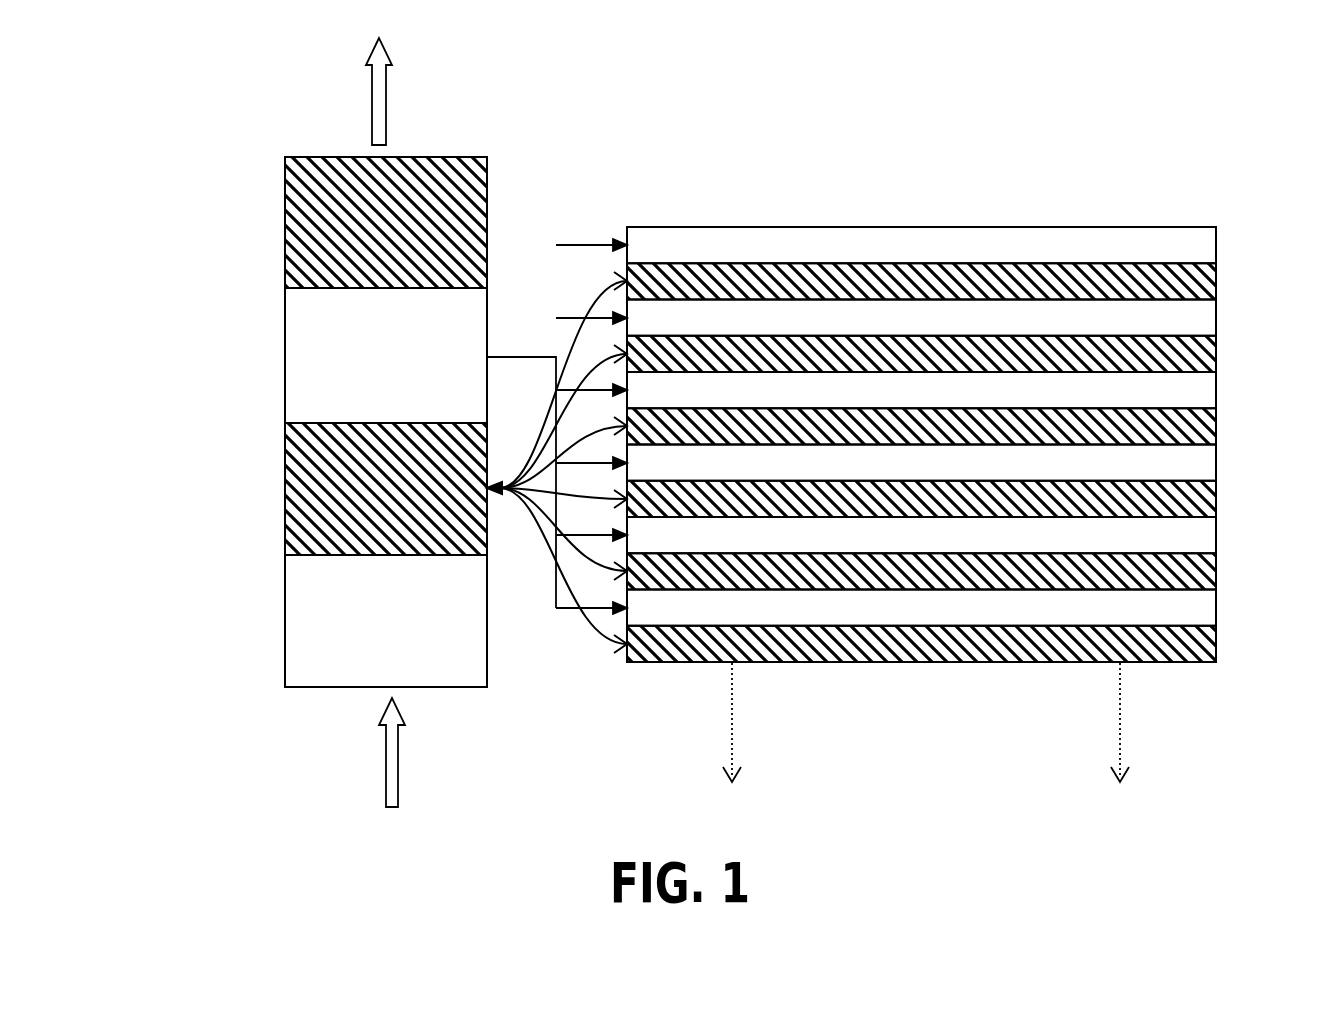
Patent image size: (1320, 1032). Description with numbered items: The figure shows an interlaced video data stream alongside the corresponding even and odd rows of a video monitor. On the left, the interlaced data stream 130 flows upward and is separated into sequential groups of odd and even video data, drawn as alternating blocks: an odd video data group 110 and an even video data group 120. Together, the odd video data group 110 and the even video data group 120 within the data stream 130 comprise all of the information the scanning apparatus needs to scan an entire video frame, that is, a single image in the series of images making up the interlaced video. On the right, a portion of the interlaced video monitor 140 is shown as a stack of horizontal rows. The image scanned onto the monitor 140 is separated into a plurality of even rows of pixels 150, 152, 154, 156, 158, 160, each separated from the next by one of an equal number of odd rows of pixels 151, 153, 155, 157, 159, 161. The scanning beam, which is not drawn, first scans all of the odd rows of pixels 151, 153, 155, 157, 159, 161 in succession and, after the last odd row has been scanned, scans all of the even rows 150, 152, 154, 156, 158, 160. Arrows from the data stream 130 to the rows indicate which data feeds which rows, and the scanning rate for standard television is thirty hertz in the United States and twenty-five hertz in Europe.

The odd video data group 110 is at (285, 339).
The even video data group 120 is at (285, 460).
The interlaced data stream 130 is at (312, 752).
The interlaced video monitor 140 is at (1192, 227).
The even row of pixels 150 is at (1216, 248).
The odd row of pixels 151 is at (1216, 284).
The even row of pixels 152 is at (1216, 320).
The odd row of pixels 153 is at (1216, 356).
The even row of pixels 154 is at (1216, 392).
The odd row of pixels 155 is at (1216, 428).
The even row of pixels 156 is at (1216, 464).
The odd row of pixels 157 is at (1216, 500).
The even row of pixels 158 is at (1216, 536).
The odd row of pixels 159 is at (1216, 572).
The even row of pixels 160 is at (1216, 608).
The odd row of pixels 161 is at (1216, 644).